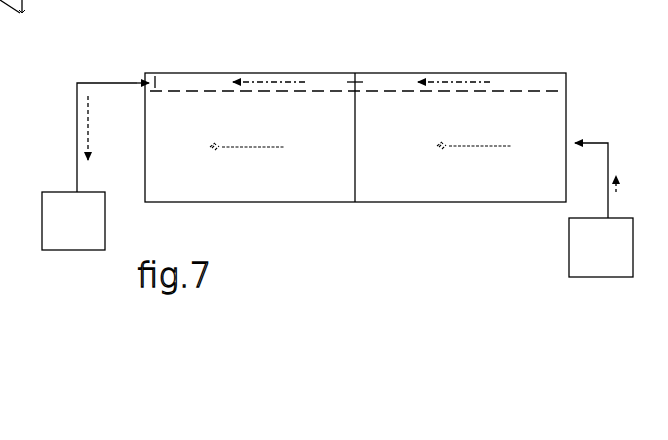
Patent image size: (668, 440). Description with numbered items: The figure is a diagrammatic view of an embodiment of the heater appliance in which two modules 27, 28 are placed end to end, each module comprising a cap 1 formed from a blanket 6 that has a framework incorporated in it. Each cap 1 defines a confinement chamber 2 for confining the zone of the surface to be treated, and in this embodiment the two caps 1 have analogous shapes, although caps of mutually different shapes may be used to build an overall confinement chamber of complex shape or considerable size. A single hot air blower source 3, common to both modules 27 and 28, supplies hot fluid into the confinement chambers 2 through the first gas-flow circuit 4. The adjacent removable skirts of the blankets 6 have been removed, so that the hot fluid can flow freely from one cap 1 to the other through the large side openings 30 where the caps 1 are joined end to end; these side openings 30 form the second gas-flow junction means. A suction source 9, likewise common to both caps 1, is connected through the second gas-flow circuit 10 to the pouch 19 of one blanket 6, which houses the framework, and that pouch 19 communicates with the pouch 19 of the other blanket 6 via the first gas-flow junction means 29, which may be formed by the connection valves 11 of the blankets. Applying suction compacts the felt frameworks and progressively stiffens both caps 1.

The cap 1 is at (186, 73).
The confinement chamber 2 is at (237, 177).
The blower source 3 is at (601, 247).
The first gas-flow circuit 4 is at (607, 142).
The blanket 6 is at (345, 148).
The suction source 9 is at (73, 221).
The second gas-flow circuit 10 is at (77, 136).
The valve 11 is at (150, 73).
The pouch 19 is at (198, 93).
The module 27 is at (441, 68).
The module 28 is at (291, 68).
The first gas-flow junction means 29 is at (349, 80).
The side opening 30 is at (344, 169).